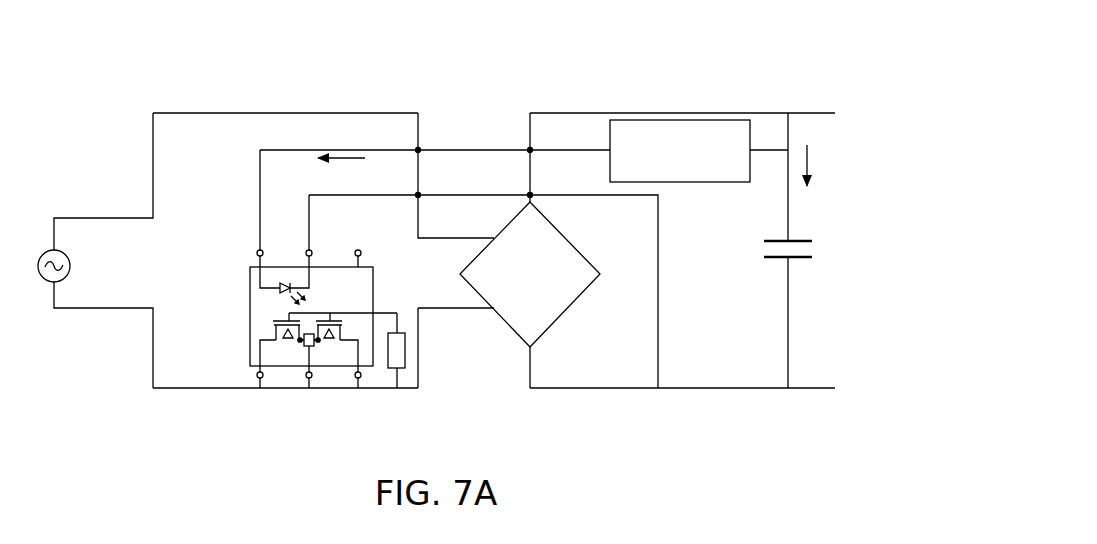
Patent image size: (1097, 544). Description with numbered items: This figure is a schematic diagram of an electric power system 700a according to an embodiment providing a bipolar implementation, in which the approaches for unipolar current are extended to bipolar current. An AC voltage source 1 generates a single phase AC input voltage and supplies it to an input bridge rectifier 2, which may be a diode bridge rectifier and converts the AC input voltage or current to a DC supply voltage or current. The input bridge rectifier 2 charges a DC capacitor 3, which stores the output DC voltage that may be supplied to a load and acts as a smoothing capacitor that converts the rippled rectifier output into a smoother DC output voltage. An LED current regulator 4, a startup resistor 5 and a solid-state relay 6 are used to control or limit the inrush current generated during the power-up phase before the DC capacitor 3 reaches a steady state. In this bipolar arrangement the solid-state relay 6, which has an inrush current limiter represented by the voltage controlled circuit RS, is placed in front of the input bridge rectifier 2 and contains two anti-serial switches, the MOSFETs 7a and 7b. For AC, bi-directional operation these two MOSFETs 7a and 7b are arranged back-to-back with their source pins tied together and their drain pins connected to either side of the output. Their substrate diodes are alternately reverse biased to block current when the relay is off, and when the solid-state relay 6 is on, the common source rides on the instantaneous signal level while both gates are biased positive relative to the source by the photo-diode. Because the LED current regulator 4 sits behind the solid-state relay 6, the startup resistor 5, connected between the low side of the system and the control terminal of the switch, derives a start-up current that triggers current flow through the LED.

The electric power system 700a is at (730, 47).
The AC voltage source 1 is at (45, 250).
The input bridge rectifier 2 is at (578, 300).
The DC capacitor 3 is at (775, 262).
The LED current regulator 4 is at (682, 119).
The startup resistor 5 is at (406, 352).
The solid-state relay 6 is at (368, 266).
The MOSFET 7a is at (283, 317).
The MOSFET 7b is at (334, 317).